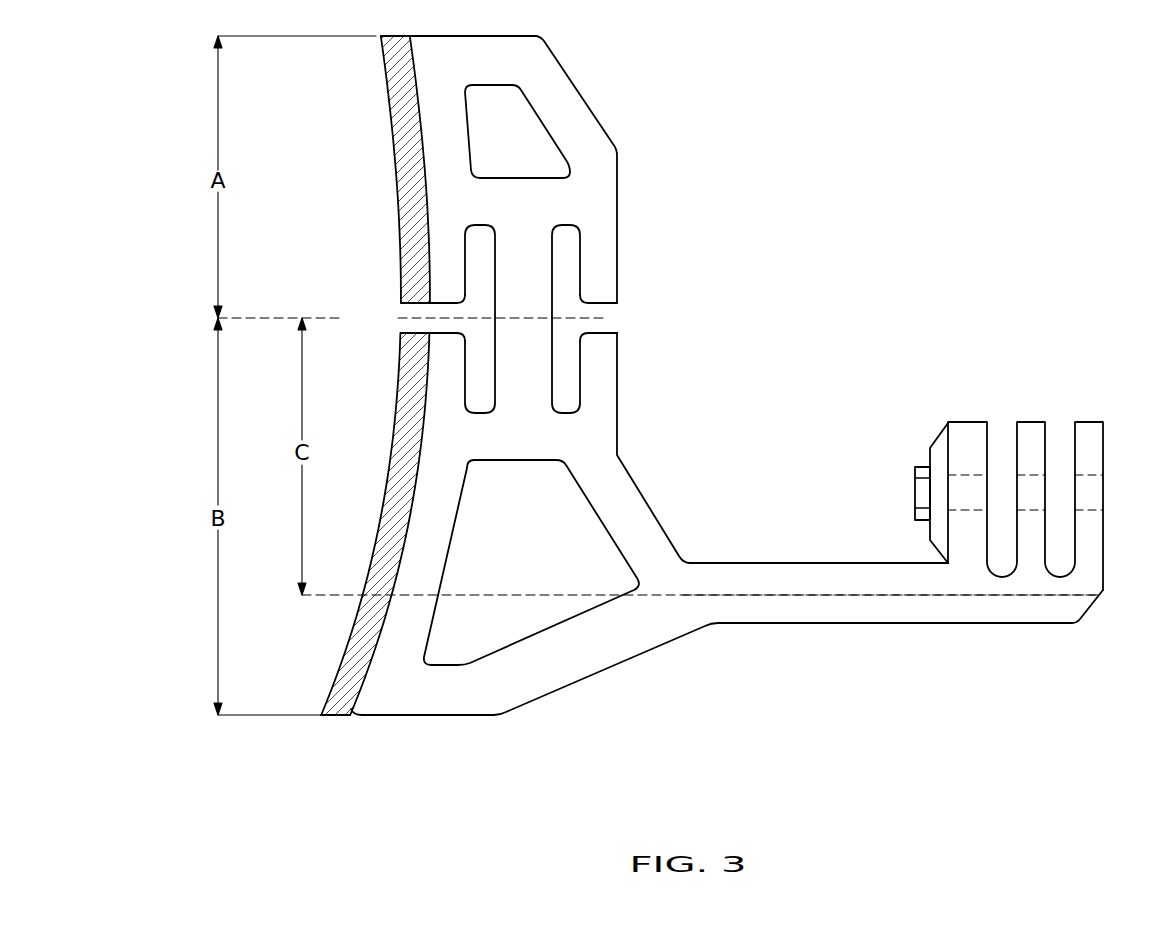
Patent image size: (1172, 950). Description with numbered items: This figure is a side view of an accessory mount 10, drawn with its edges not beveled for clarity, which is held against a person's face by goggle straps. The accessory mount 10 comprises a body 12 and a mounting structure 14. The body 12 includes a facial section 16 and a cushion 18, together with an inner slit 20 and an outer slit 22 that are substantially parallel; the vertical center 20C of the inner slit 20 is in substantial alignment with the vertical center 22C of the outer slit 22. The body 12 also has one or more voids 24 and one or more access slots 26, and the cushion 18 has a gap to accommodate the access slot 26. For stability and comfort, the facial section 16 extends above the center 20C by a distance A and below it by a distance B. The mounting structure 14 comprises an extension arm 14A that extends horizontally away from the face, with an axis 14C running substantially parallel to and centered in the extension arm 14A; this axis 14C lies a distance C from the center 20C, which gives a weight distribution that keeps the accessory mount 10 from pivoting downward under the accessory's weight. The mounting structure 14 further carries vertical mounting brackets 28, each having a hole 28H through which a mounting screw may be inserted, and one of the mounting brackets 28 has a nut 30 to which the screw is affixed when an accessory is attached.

The accessory mount 10 is at (925, 167).
The body 12 is at (322, 733).
The mounting structure 14 is at (921, 540).
The extension arm 14A is at (807, 573).
The axis 14C is at (780, 595).
The facial section 16 is at (372, 375).
The cushion 18 is at (385, 82).
The inner slit 20 is at (440, 306).
The vertical center of the inner slit 20C is at (445, 317).
The outer slit 22 is at (617, 313).
The vertical center of the outer slit 22C is at (572, 323).
The voids 24 is at (527, 128).
The access slots 26 is at (395, 302).
The mounting brackets 28 is at (967, 422).
The hole 28H is at (967, 487).
The nut 30 is at (913, 488).